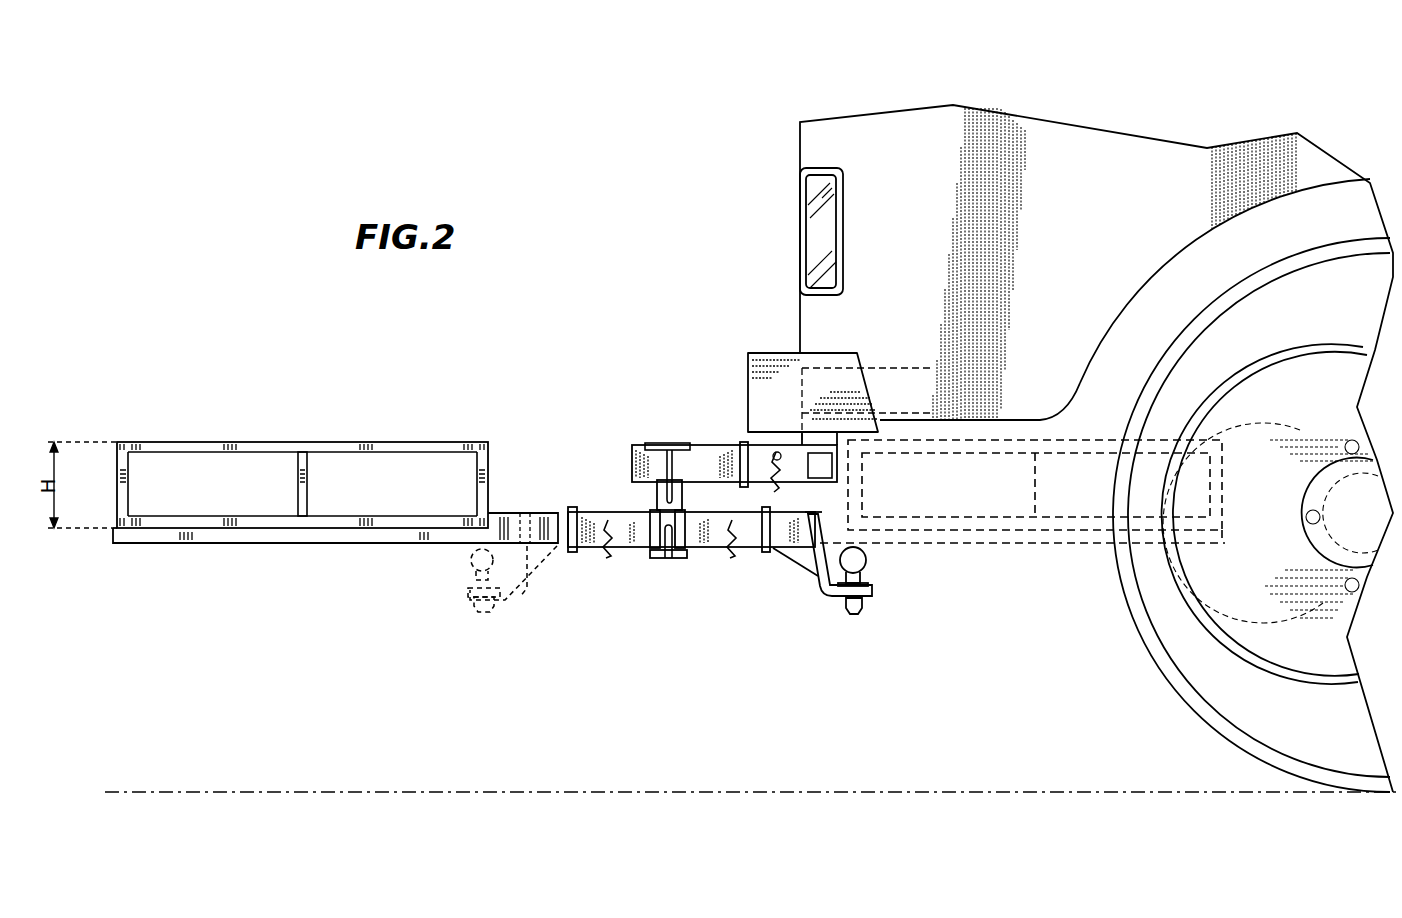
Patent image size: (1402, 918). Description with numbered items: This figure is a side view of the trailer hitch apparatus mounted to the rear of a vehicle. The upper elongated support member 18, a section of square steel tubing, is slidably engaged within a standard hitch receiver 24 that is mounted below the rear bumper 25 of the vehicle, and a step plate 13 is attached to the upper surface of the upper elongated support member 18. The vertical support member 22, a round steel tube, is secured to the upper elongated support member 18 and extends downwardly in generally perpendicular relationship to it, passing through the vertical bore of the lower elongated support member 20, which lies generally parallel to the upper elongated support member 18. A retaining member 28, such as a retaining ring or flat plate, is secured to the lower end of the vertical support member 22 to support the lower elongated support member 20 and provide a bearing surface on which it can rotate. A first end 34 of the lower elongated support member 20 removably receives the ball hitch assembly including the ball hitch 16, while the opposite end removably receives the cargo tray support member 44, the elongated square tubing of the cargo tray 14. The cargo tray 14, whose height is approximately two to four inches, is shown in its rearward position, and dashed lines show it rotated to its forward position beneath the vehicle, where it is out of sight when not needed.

The step plate 13 is at (658, 443).
The cargo tray 14 is at (273, 442).
The ball hitch 16 is at (472, 565).
The upper elongated support member 18 is at (707, 446).
The lower elongated support member 20 is at (628, 549).
The vertical support member 22 is at (657, 500).
The hitch receiver 24 is at (762, 450).
The rear bumper 25 is at (770, 352).
The retaining member 28 is at (680, 560).
The first end 34 is at (765, 553).
The cargo tray support member 44 is at (248, 544).